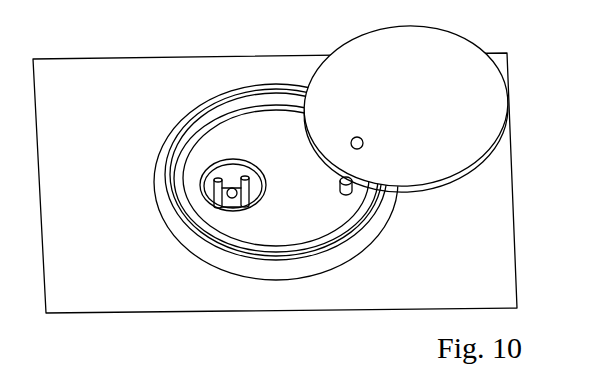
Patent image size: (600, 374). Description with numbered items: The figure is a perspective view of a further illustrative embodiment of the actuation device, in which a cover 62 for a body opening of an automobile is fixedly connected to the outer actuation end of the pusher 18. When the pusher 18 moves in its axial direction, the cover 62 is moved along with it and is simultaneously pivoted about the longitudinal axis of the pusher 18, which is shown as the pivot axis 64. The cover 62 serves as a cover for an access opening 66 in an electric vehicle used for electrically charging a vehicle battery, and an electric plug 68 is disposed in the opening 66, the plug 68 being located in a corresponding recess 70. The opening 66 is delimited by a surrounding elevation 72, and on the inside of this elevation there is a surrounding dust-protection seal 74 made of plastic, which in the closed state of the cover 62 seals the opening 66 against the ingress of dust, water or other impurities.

The pusher 18 is at (356, 187).
The cover 62 is at (439, 42).
The pivot axis 64 is at (363, 142).
The access opening 66 is at (172, 227).
The electric plug 68 is at (218, 178).
The recess 70 is at (232, 176).
The surrounding elevation 72 is at (160, 153).
The dust-protection seal 74 is at (263, 100).